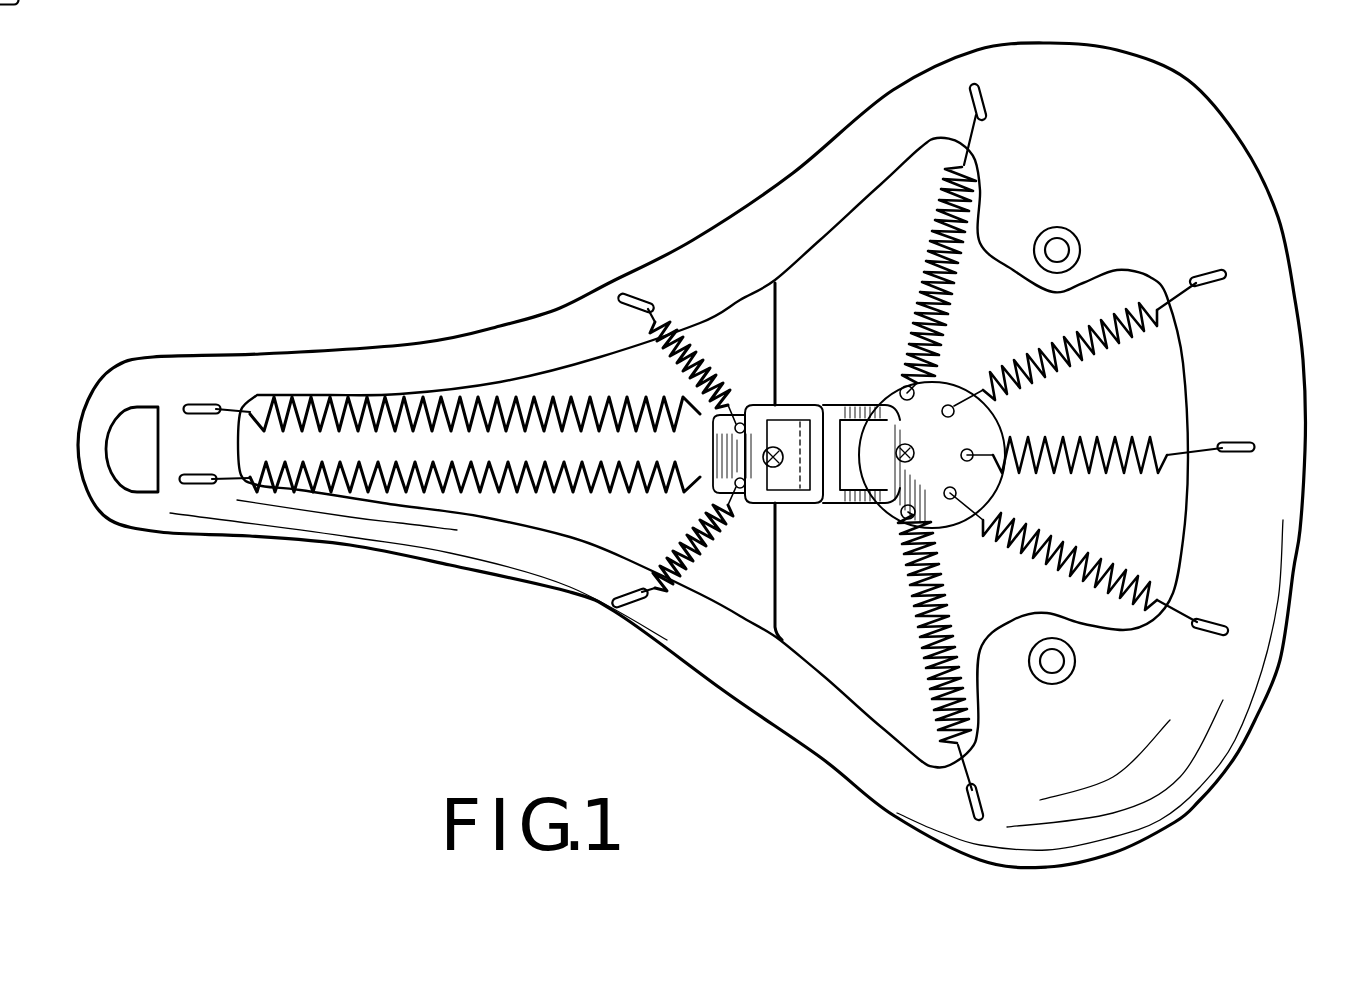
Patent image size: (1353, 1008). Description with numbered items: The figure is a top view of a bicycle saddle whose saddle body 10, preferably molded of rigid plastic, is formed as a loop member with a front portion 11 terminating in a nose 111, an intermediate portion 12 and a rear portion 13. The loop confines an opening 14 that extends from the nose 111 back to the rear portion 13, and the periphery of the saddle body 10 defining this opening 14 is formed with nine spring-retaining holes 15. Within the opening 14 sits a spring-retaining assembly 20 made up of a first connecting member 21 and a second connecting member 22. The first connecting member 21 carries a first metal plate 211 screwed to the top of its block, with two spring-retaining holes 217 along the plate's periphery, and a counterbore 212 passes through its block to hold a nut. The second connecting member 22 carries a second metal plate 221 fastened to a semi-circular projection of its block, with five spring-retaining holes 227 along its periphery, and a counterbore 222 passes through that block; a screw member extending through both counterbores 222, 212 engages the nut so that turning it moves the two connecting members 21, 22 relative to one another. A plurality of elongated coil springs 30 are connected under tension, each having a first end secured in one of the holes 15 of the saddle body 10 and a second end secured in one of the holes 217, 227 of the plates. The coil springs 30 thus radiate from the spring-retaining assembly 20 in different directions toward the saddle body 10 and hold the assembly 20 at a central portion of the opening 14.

The saddle body 10 is at (600, 612).
The front portion 11 is at (458, 567).
The nose 111 is at (192, 520).
The intermediate portion 12 is at (722, 670).
The rear portion 13 is at (937, 850).
The opening 14 is at (857, 687).
The spring-retaining holes 15 is at (637, 603).
The spring-retaining assembly 20 is at (908, 433).
The first connecting member 21 is at (776, 445).
The first metal plate 211 is at (805, 407).
The counterbore 212 is at (757, 417).
The spring-retaining holes 217 is at (740, 489).
The second connecting member 22 is at (914, 438).
The second metal plate 221 is at (862, 410).
The counterbore 222 is at (900, 375).
The spring-retaining holes 227 is at (912, 516).
The coil springs 30 is at (556, 496).